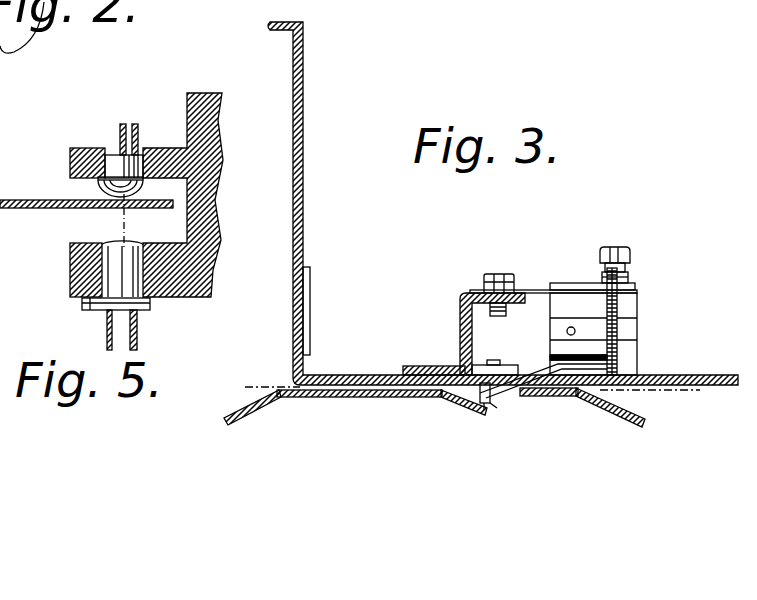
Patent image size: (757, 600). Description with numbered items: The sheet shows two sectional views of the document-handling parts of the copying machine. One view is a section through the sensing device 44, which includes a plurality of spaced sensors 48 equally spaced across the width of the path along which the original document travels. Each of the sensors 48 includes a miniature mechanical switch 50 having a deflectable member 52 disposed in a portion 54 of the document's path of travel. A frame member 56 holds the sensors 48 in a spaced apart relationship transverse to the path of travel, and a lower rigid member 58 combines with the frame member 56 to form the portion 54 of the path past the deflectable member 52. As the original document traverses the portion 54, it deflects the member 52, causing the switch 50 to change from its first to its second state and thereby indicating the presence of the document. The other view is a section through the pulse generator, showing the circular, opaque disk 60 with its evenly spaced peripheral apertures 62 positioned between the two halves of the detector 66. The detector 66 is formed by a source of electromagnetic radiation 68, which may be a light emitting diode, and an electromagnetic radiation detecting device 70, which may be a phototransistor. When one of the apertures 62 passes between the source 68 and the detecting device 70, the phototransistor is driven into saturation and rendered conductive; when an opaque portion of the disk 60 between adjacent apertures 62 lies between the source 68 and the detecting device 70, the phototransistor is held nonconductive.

In FIG. 3, the sensing device 44 is at (612, 232).
In FIG. 3, the spaced sensors 48 is at (641, 308).
In FIG. 3, the miniature mechanical switch 50 is at (628, 338).
In FIG. 3, the deflectable member 52 is at (492, 406).
In FIG. 3, the portion of the path of travel 54 is at (528, 386).
In FIG. 3, the frame member 56 is at (303, 150).
In FIG. 3, the lower rigid member 58 is at (383, 399).
In FIG. 5, the circular, opaque disk 60 is at (36, 198).
In FIG. 5, the apertures 62 is at (129, 209).
In FIG. 5, the detector 66 is at (52, 268).
In FIG. 5, the source of electromagnetic radiation 68 is at (115, 160).
In FIG. 5, the electromagnetic radiation detecting device 70 is at (118, 288).